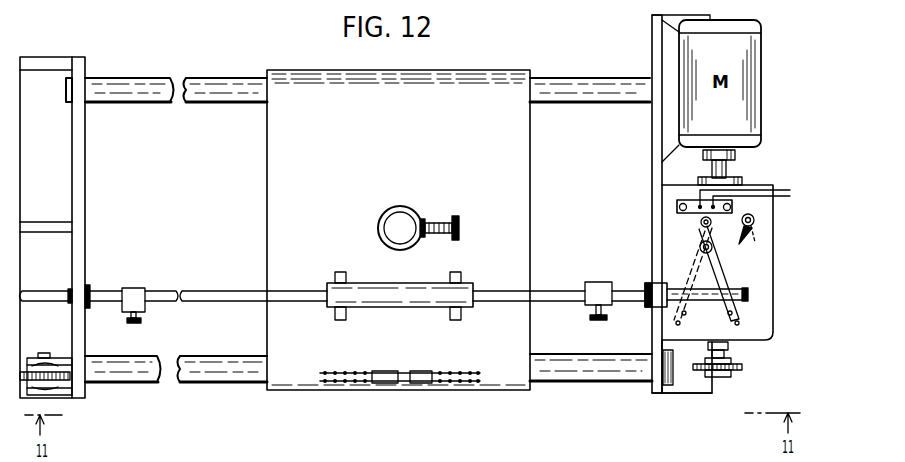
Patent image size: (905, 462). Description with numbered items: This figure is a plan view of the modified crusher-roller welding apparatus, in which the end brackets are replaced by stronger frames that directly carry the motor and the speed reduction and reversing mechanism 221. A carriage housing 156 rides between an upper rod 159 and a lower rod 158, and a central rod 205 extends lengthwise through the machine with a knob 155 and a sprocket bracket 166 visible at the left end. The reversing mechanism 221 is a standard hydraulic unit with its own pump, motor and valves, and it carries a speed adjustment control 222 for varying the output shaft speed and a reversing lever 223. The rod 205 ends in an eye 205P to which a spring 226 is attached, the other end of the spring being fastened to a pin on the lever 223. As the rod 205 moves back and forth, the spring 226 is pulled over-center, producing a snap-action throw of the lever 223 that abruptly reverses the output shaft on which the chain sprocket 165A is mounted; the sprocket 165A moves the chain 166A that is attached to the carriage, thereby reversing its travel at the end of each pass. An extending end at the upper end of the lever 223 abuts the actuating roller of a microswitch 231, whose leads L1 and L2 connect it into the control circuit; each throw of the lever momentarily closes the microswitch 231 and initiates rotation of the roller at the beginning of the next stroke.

The knob 155 is at (415, 212).
The housing 156 is at (508, 157).
The lower guide rod 158 is at (195, 374).
The upper guide rod 159 is at (143, 77).
The chain sprocket 165A is at (735, 368).
The sprocket and bracket 166 is at (63, 380).
The chain 166A is at (455, 380).
The rod 205 is at (560, 292).
The eye 205P is at (746, 288).
The speed reduction and reversing mechanism 221 is at (753, 330).
The speed adjustment control 222 is at (742, 247).
The reversing lever 223 is at (719, 280).
The spring 226 is at (738, 303).
The microswitch 231 is at (690, 218).
The lead wire L1 is at (753, 187).
The lead wire L2 is at (762, 205).